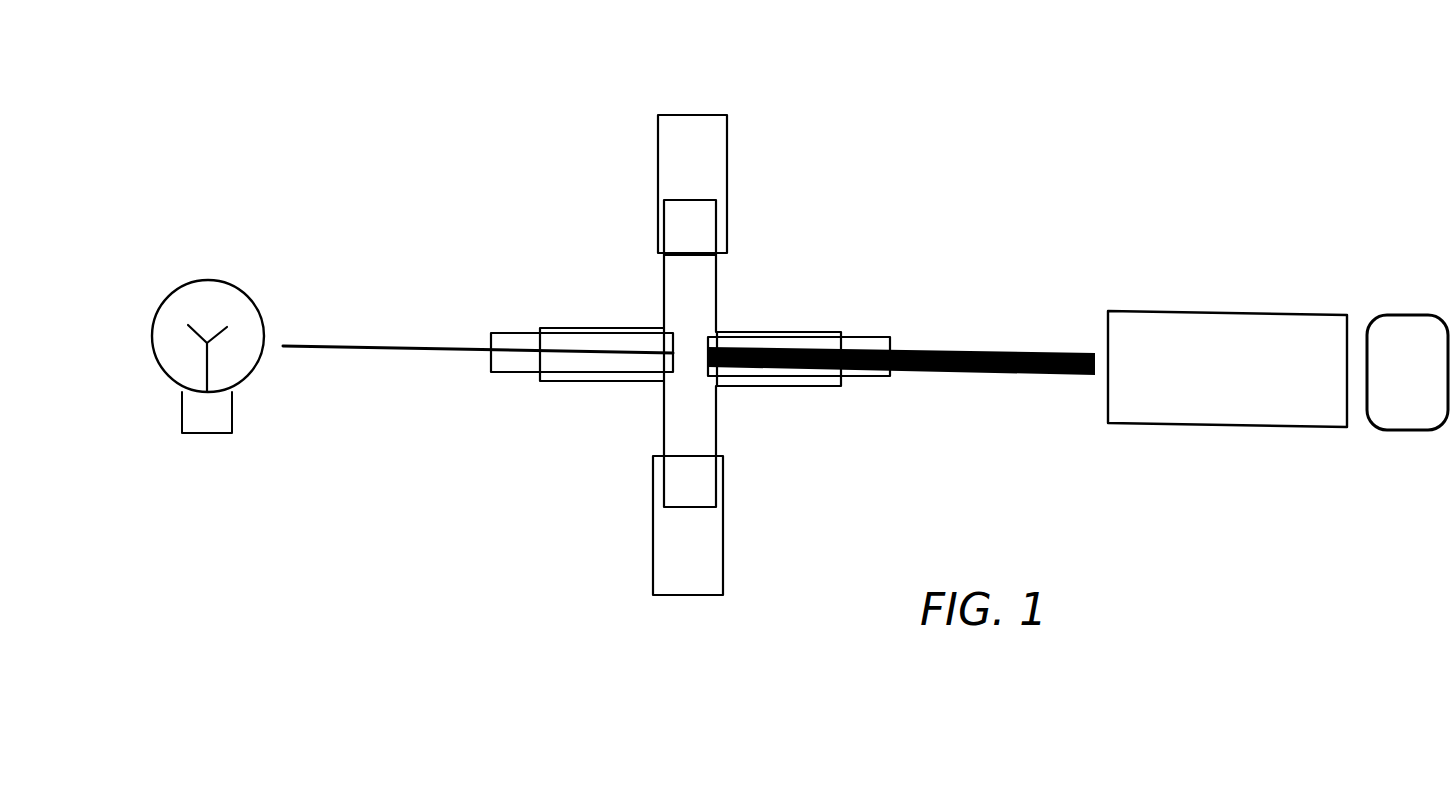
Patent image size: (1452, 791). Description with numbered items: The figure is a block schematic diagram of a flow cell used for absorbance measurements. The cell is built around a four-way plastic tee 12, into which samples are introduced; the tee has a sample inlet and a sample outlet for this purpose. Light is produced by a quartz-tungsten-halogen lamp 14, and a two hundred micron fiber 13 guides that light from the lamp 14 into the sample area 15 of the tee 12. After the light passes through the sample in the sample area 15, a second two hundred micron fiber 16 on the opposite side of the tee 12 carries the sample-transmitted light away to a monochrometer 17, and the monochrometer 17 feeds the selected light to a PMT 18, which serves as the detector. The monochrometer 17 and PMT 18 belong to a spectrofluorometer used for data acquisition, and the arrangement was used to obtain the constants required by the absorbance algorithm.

The 4-way plastic tee 12 is at (705, 268).
The fiber 13 is at (410, 350).
The quartz-tungsten-halogen lamp 14 is at (170, 297).
The sample area 15 is at (688, 353).
The fiber 16 is at (988, 373).
The monochrometer 17 is at (1210, 310).
The PMT 18 is at (1405, 315).